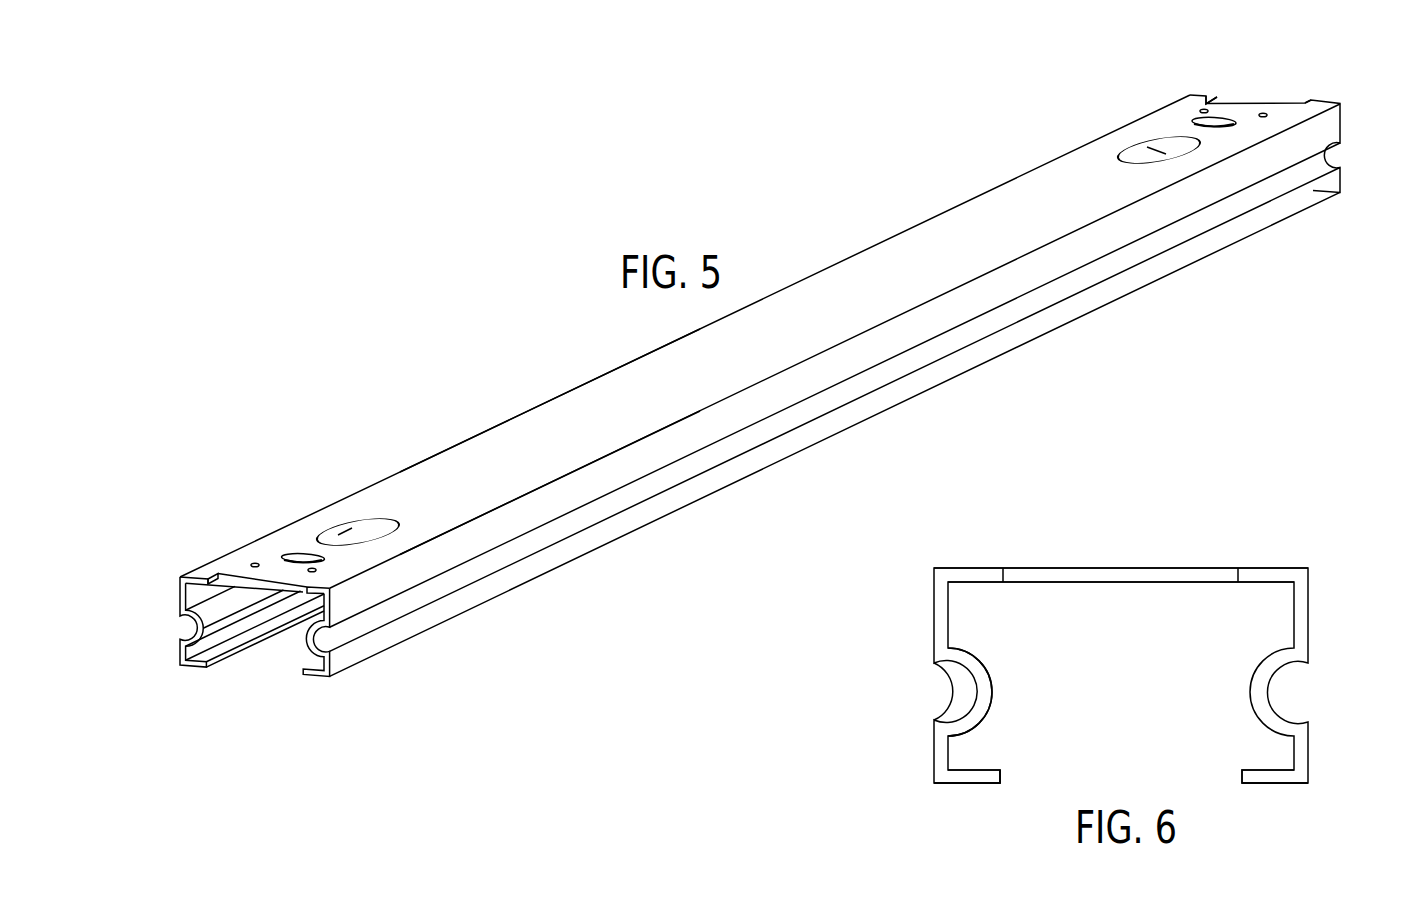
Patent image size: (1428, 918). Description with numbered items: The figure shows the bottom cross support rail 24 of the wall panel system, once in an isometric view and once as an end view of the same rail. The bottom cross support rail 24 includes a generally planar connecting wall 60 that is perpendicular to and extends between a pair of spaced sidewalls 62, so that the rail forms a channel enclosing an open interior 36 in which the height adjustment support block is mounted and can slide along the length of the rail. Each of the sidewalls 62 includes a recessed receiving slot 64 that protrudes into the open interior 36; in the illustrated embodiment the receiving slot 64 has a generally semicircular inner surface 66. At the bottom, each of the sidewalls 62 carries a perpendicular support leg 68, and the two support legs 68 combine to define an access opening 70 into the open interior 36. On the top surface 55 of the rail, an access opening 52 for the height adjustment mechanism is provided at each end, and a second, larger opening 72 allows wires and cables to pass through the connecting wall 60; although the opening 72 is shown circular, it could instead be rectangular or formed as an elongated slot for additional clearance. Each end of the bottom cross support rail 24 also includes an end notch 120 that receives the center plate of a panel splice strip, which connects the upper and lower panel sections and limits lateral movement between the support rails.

In FIG. 5, the bottom cross support rail 24 is at (800, 257).
In FIG. 6, the open interior 36 is at (1150, 612).
In FIG. 5, the access opening 52 is at (300, 552).
In FIG. 5, the top surface 55 is at (607, 378).
In FIG. 5, the connecting wall 60 is at (487, 437).
In FIG. 6, the connecting wall 60 is at (975, 578).
In FIG. 5, the sidewalls 62 is at (180, 600).
In FIG. 6, the sidewalls 62 is at (934, 616).
In FIG. 5, the receiving slot 64 is at (690, 468).
In FIG. 6, the receiving slot 64 is at (949, 692).
In FIG. 6, the semicircular inner surface 66 is at (972, 665).
In FIG. 6, the support leg 68 is at (968, 775).
In FIG. 6, the access opening 70 is at (1052, 778).
In FIG. 5, the opening 72 is at (358, 523).
In FIG. 5, the end notch 120 is at (243, 573).